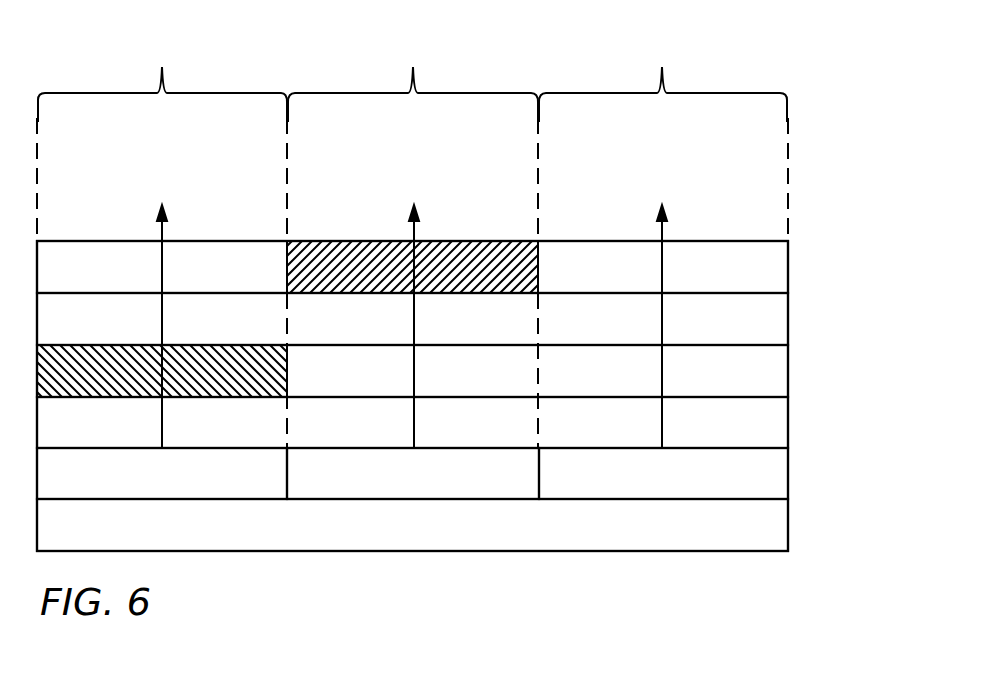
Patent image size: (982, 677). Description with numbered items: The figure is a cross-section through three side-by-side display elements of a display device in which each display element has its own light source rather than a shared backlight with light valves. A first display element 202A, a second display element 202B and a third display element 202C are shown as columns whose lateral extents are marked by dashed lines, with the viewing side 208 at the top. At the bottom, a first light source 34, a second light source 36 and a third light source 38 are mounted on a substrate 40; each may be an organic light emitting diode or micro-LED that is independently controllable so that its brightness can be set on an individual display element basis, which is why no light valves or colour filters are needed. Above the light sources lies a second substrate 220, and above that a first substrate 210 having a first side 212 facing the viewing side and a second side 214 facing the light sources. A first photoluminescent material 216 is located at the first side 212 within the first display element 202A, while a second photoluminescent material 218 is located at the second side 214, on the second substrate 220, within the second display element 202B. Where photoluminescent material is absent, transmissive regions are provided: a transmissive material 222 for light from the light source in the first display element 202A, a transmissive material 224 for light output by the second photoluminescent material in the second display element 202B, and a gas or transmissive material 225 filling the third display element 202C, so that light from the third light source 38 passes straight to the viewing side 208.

The first display element 202A is at (413, 229).
The second display element 202B is at (162, 230).
The third display element 202C is at (663, 228).
The viewing side 208 is at (701, 150).
The first substrate 210 is at (788, 317).
The first side 212 is at (753, 293).
The second side 214 is at (755, 345).
The first photoluminescent material 216 is at (539, 270).
The second photoluminescent material 218 is at (288, 377).
The second substrate 220 is at (788, 418).
The transmissive material 222 is at (496, 383).
The transmissive material 224 is at (126, 278).
The transmissive material 225 is at (744, 278).
The first light source 34 is at (428, 487).
The second light source 36 is at (168, 495).
The third light source 38 is at (678, 487).
The substrate 40 is at (788, 523).